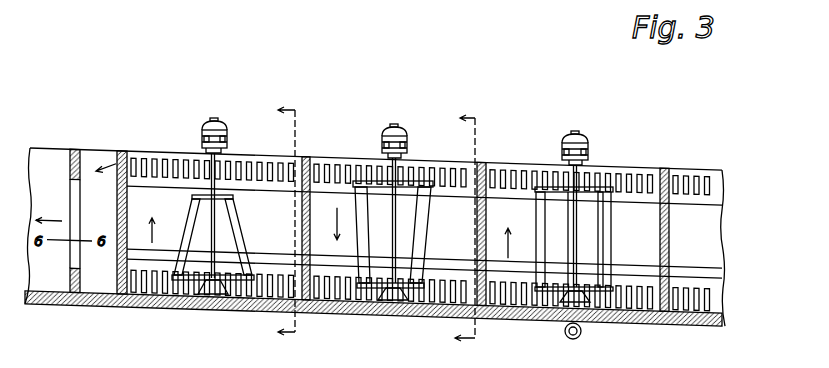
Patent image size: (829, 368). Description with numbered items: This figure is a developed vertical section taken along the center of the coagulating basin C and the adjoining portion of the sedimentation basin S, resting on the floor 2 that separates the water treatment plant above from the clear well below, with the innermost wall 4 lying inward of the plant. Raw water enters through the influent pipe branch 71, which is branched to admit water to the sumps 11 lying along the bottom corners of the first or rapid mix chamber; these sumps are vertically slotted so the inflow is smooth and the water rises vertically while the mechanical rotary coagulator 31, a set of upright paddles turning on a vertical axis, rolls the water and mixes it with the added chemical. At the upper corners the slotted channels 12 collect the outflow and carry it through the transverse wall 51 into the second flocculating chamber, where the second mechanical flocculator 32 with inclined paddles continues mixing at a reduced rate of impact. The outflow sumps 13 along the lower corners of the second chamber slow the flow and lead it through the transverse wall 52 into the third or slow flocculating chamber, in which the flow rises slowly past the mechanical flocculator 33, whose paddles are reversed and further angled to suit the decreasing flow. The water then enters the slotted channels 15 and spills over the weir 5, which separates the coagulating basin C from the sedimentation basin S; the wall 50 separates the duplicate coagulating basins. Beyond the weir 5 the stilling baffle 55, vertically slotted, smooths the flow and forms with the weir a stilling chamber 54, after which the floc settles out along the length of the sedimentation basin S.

The sedimentation basin S is at (53, 137).
The coagulating basin C is at (355, 152).
The floor 2 is at (40, 301).
The innermost wall 4 is at (469, 228).
The transverse wall or weir 5 is at (117, 204).
The sumps 11 is at (637, 292).
The channels 12 is at (437, 168).
The outflow sumps 13 is at (152, 291).
The slotted channels 15 is at (167, 158).
The mechanical rotary coagulator 31 is at (538, 203).
The second mechanical flocculator 32 is at (423, 237).
The mechanical flocculator 33 is at (235, 227).
The wall 50 is at (669, 182).
The transverse wall 51 is at (486, 163).
The transverse wall 52 is at (306, 158).
The stilling chamber 54 is at (95, 270).
The stilling baffle 55 is at (79, 163).
The influent pipe branch 71 is at (579, 338).